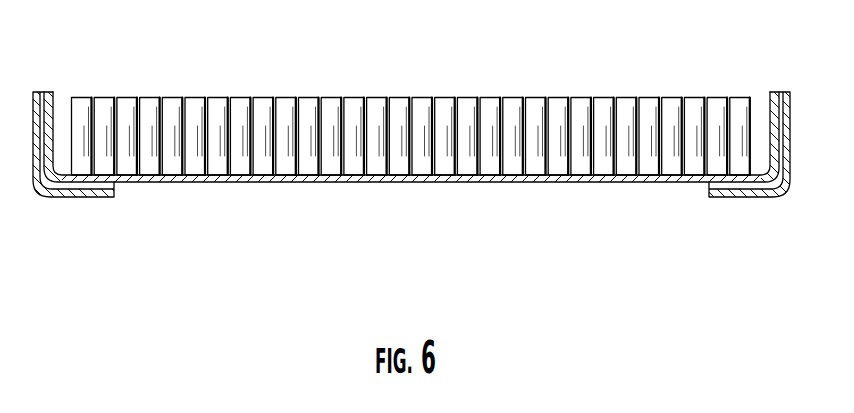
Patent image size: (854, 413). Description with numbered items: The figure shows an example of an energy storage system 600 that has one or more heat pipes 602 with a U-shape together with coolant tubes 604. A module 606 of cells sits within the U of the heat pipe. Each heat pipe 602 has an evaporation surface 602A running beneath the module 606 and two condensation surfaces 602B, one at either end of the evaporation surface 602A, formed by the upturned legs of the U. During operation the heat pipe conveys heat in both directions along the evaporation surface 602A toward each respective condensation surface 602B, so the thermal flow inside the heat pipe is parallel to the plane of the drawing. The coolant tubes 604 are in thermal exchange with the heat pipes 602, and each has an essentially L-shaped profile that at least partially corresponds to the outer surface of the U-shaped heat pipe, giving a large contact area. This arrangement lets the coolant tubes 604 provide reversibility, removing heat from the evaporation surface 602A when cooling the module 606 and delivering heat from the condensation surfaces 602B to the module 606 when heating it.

The energy storage system 600 is at (218, 206).
The heat pipe 602 is at (458, 183).
The evaporation surface 602A is at (424, 182).
The condensation surface 602B is at (766, 100).
The coolant tube 604 is at (48, 195).
The module 606 is at (218, 105).